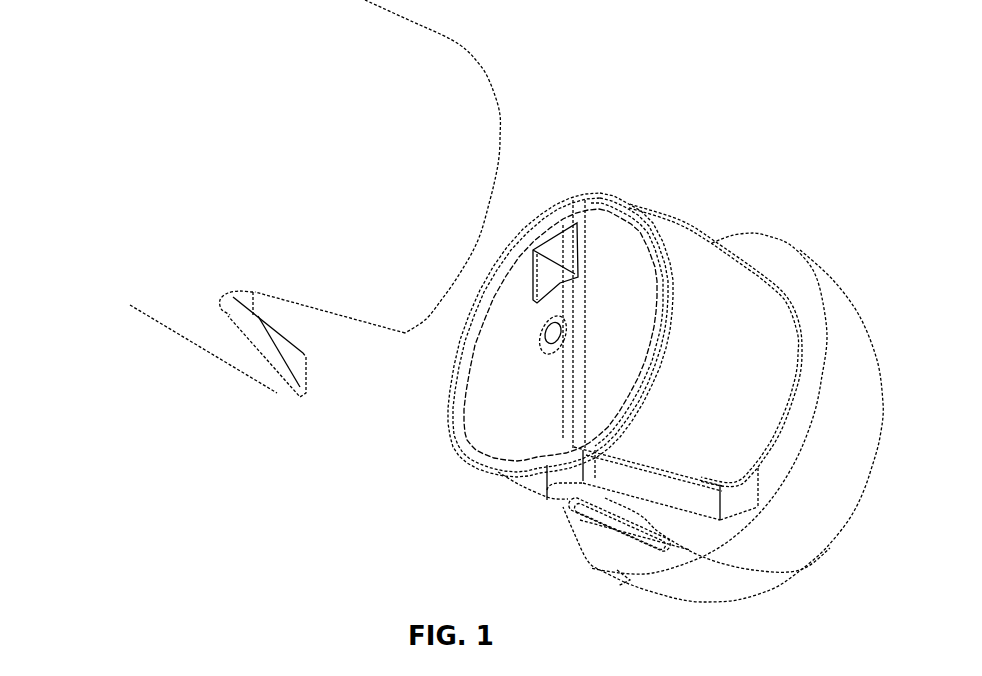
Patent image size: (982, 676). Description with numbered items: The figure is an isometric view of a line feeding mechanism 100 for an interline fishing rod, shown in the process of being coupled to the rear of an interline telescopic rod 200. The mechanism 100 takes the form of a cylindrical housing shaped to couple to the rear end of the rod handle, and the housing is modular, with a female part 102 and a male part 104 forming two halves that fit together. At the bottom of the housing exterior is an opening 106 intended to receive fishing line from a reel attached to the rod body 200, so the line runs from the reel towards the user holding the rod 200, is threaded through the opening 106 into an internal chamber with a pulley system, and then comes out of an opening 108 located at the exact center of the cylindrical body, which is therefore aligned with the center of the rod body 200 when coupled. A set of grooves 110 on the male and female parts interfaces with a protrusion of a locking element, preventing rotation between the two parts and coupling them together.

The line feeding mechanism 100 is at (805, 20).
The interline telescopic rod 200 is at (248, 140).
The female part 102 is at (561, 200).
The male part 104 is at (605, 190).
The opening 106 is at (647, 542).
The opening 108 is at (548, 334).
The set of grooves 110 is at (577, 249).